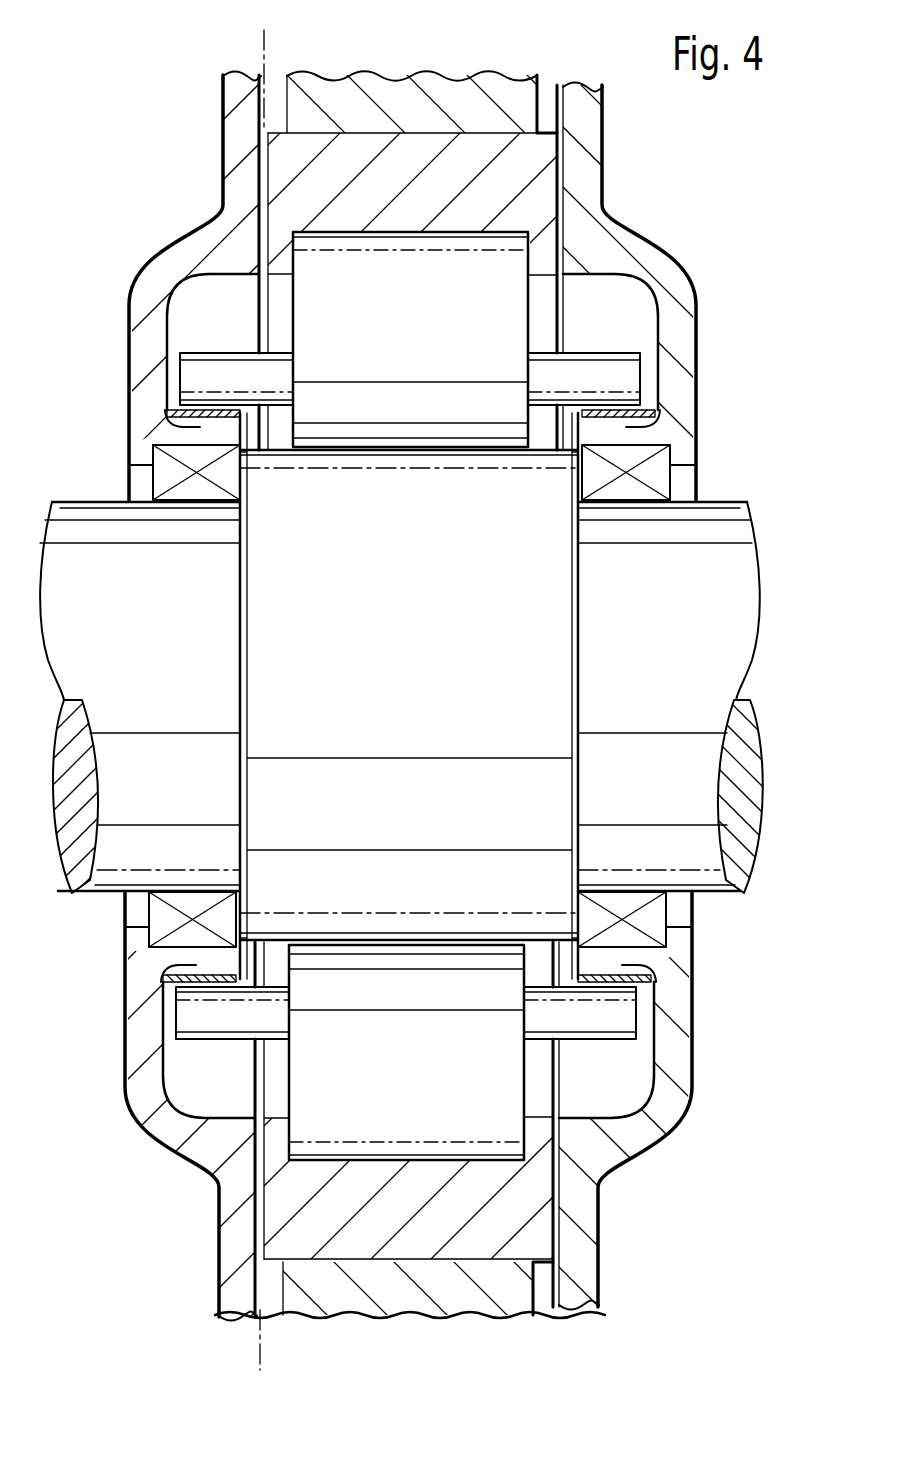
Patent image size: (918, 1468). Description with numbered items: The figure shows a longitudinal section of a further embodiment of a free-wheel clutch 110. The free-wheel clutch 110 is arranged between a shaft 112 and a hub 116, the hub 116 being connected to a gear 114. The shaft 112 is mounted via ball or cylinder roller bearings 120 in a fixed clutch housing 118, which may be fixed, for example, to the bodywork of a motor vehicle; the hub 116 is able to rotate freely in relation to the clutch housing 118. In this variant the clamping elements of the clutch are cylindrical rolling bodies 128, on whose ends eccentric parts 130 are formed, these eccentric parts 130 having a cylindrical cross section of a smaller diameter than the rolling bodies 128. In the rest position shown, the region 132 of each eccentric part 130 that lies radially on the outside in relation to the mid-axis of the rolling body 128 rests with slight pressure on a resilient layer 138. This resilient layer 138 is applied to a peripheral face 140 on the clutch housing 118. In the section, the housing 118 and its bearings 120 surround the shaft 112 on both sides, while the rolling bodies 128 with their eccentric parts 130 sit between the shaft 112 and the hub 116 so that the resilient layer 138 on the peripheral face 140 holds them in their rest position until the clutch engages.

The free-wheel clutch 110 is at (698, 274).
The shaft 112 is at (718, 578).
The gear 114 is at (517, 92).
The hub 116 is at (530, 162).
The clutch housing 118 is at (595, 247).
The ball or cylinder roller bearings 120 is at (177, 473).
The cylindrical rolling bodies 128 is at (338, 303).
The eccentric parts 130 is at (210, 367).
The region of the eccentric part 132 is at (627, 402).
The resilient layer 138 is at (187, 425).
The peripheral face 140 is at (637, 430).